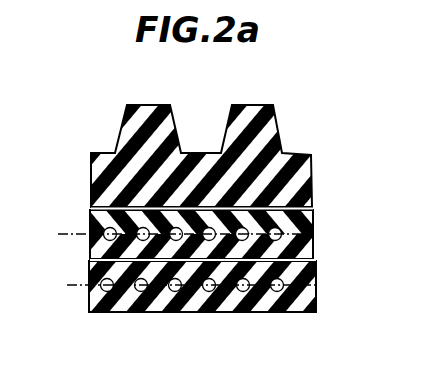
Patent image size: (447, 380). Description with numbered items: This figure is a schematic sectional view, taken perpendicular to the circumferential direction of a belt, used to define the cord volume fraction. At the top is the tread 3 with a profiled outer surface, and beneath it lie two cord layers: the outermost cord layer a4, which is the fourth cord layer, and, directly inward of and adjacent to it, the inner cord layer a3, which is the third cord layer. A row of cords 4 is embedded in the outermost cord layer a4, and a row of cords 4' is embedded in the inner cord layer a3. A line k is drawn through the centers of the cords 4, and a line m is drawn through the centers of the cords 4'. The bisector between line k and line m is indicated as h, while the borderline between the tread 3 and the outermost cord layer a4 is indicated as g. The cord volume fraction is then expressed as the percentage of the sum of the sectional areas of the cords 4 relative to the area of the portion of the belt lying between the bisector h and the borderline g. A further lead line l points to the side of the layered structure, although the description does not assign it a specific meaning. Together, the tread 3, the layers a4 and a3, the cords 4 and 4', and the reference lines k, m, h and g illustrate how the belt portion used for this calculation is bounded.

The tread 3 is at (303, 175).
The cords 4 is at (234, 220).
The cords 4' is at (202, 316).
The borderline g is at (90, 198).
The line k is at (313, 237).
The bisector h is at (315, 253).
The line m is at (316, 287).
The side edge of layer l is at (82, 255).
The outermost cord layer a4 is at (90, 217).
The inner cord layer a3 is at (92, 310).